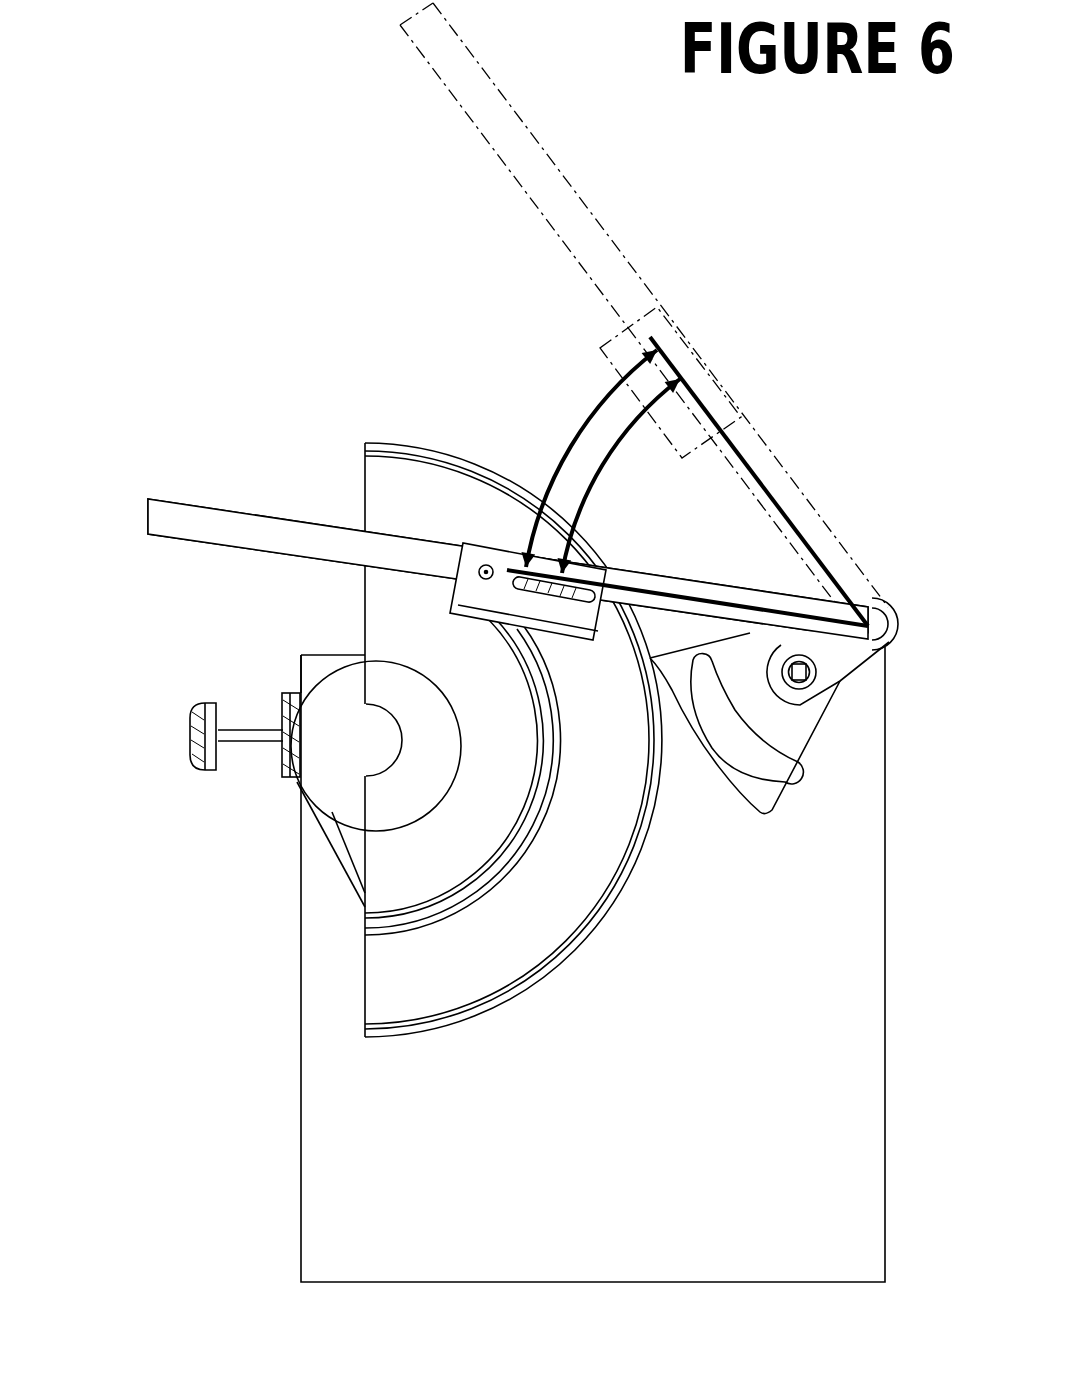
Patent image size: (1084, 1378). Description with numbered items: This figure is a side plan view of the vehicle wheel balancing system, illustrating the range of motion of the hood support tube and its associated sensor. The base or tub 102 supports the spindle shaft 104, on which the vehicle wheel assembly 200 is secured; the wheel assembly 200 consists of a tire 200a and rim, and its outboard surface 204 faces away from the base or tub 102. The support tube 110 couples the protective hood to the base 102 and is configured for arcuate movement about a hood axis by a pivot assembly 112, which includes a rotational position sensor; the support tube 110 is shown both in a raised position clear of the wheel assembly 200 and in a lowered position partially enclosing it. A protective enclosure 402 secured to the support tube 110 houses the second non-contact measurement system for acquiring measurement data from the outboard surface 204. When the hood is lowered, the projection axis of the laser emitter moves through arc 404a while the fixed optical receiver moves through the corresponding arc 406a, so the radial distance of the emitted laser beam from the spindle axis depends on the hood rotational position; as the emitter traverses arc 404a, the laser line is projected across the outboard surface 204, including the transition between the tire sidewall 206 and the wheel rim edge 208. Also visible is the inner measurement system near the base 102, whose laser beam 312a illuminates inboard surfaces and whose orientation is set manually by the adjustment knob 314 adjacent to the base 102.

The base or tub 102 is at (363, 1213).
The spindle shaft 104 is at (297, 782).
The support tube 110 is at (602, 197).
The pivot assembly 112 is at (832, 698).
The vehicle wheel assembly 200 is at (568, 842).
The tire 200a is at (388, 1046).
The outboard surface 204 is at (483, 814).
The tire sidewall 206 is at (432, 983).
The wheel rim edge 208 is at (470, 907).
The laser beam 312a is at (330, 865).
The adjustment knob 314 is at (190, 707).
The protective enclosure 402 is at (505, 604).
The arc 404a is at (618, 430).
The arc 406a is at (560, 452).